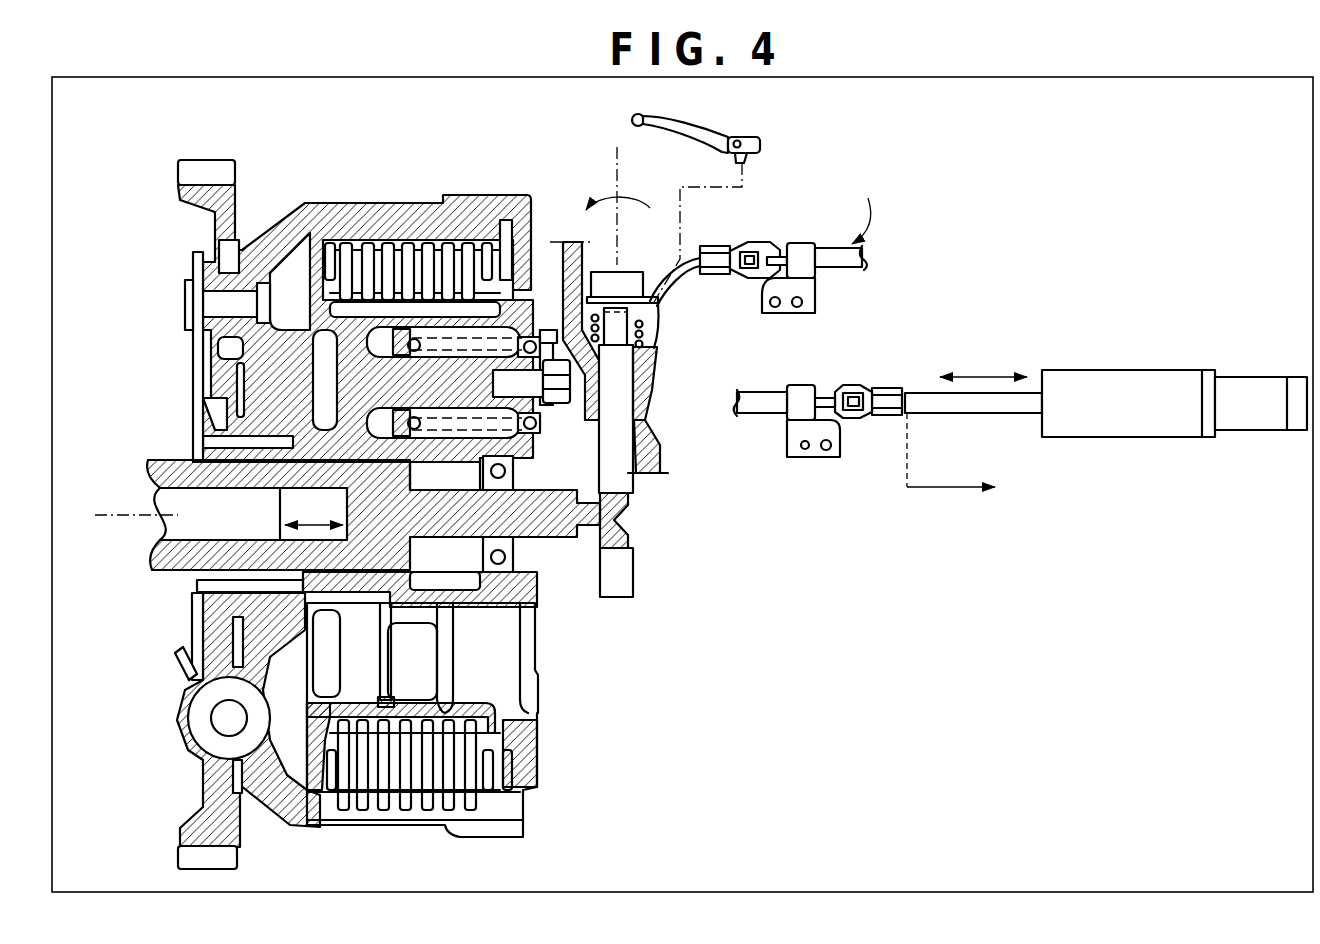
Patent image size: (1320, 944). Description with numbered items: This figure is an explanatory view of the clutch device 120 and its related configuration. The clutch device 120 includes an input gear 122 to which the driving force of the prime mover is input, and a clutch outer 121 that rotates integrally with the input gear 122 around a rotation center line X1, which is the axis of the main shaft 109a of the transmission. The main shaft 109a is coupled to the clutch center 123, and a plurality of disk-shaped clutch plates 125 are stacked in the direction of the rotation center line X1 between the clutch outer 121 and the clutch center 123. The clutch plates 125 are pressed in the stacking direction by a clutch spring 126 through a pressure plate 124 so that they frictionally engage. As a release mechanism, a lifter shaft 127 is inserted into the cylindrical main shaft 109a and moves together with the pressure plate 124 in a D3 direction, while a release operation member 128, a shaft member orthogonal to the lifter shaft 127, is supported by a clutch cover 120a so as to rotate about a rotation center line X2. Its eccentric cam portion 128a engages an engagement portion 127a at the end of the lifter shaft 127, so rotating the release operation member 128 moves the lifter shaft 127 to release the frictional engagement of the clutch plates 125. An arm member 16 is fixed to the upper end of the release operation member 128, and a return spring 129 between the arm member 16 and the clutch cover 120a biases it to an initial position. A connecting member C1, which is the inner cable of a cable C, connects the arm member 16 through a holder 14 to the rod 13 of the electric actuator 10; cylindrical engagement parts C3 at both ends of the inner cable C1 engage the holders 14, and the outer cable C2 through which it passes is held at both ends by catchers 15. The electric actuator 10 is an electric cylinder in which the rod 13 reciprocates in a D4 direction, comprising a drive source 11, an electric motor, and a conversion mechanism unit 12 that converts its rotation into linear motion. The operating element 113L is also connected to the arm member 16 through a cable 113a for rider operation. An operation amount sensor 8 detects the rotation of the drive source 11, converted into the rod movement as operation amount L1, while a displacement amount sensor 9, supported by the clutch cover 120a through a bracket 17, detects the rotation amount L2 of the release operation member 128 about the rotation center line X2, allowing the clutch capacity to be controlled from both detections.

The operation amount sensor 8 is at (1295, 432).
The displacement amount sensor 9 is at (640, 272).
The electric actuator 10 is at (1174, 422).
The drive source 11 is at (1238, 376).
The conversion mechanism unit 12 is at (1088, 369).
The rod 13 is at (913, 392).
The holder 14 is at (738, 243).
The catcher 15 is at (805, 242).
The arm member 16 is at (696, 268).
The bracket 17 is at (655, 372).
The main shaft 109a is at (157, 459).
The operating element 113L is at (718, 130).
The cable 113a is at (743, 172).
The clutch device 120 is at (673, 731).
The clutch cover 120a is at (663, 468).
The clutch outer 121 is at (304, 202).
The input gear 122 is at (213, 158).
The clutch center 123 is at (410, 590).
The pressure plate 124 is at (538, 597).
The clutch plates 125 is at (382, 242).
The clutch spring 126 is at (550, 428).
The lifter shaft 127 is at (552, 540).
The engagement portion 127a is at (633, 512).
The release operation member 128 is at (623, 397).
The eccentric cam portion 128a is at (636, 545).
The return spring 129 is at (645, 338).
The cable C is at (863, 207).
The connecting member C1 is at (781, 256).
The outer cable C2 is at (846, 270).
The engagement part C3 is at (750, 270).
The D3 direction D3 is at (314, 509).
The D4 direction D4 is at (983, 361).
The operation amount L1 is at (951, 465).
The rotation amount L2 is at (608, 184).
The rotation center line X1 is at (105, 512).
The rotation center line X2 is at (617, 150).